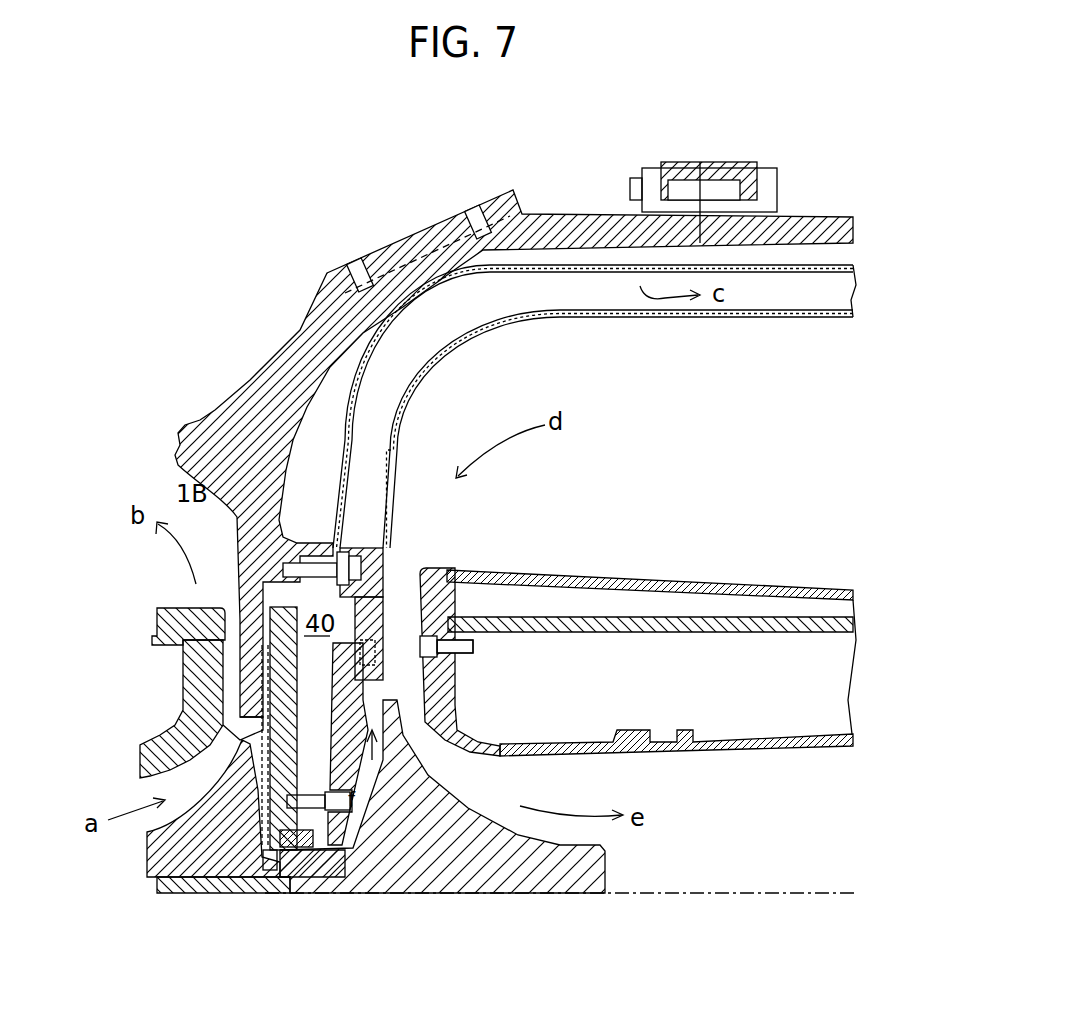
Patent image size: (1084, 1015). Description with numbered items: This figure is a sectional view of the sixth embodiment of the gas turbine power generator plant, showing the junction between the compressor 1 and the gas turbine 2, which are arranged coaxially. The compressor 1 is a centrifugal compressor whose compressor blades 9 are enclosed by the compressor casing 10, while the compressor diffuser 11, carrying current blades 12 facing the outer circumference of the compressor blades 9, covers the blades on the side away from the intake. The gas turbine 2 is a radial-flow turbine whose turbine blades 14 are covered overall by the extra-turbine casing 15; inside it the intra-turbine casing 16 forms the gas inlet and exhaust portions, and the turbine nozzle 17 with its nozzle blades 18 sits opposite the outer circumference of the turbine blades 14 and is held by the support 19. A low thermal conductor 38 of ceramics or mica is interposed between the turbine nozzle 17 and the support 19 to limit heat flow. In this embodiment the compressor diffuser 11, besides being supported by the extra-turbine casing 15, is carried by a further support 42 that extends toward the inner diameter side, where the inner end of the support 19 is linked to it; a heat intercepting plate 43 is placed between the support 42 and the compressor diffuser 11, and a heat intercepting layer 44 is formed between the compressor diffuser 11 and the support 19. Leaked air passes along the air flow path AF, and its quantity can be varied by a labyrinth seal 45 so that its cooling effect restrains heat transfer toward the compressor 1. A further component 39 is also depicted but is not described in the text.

The compressor 1 is at (155, 631).
The gas turbine 2 is at (556, 213).
The compressor blades 9 is at (160, 830).
The compressor casing 10 is at (155, 612).
The compressor diffuser 11 is at (257, 697).
The current blades 12 is at (230, 672).
The turbine blades 14 is at (468, 810).
The extra-turbine casing 15 is at (277, 333).
The intra-turbine casing 16 is at (732, 590).
The turbine nozzle 17 is at (445, 708).
The nozzle blades 18 is at (407, 660).
The support 19 is at (387, 790).
The low thermal conductor 38 is at (372, 608).
The duct 39 is at (738, 272).
The support 42 is at (287, 680).
The heat intercepting plate 43 is at (185, 890).
The heat intercepting layer 44 is at (240, 607).
The labyrinth seal 45 is at (288, 856).
The air flow path AF is at (327, 847).